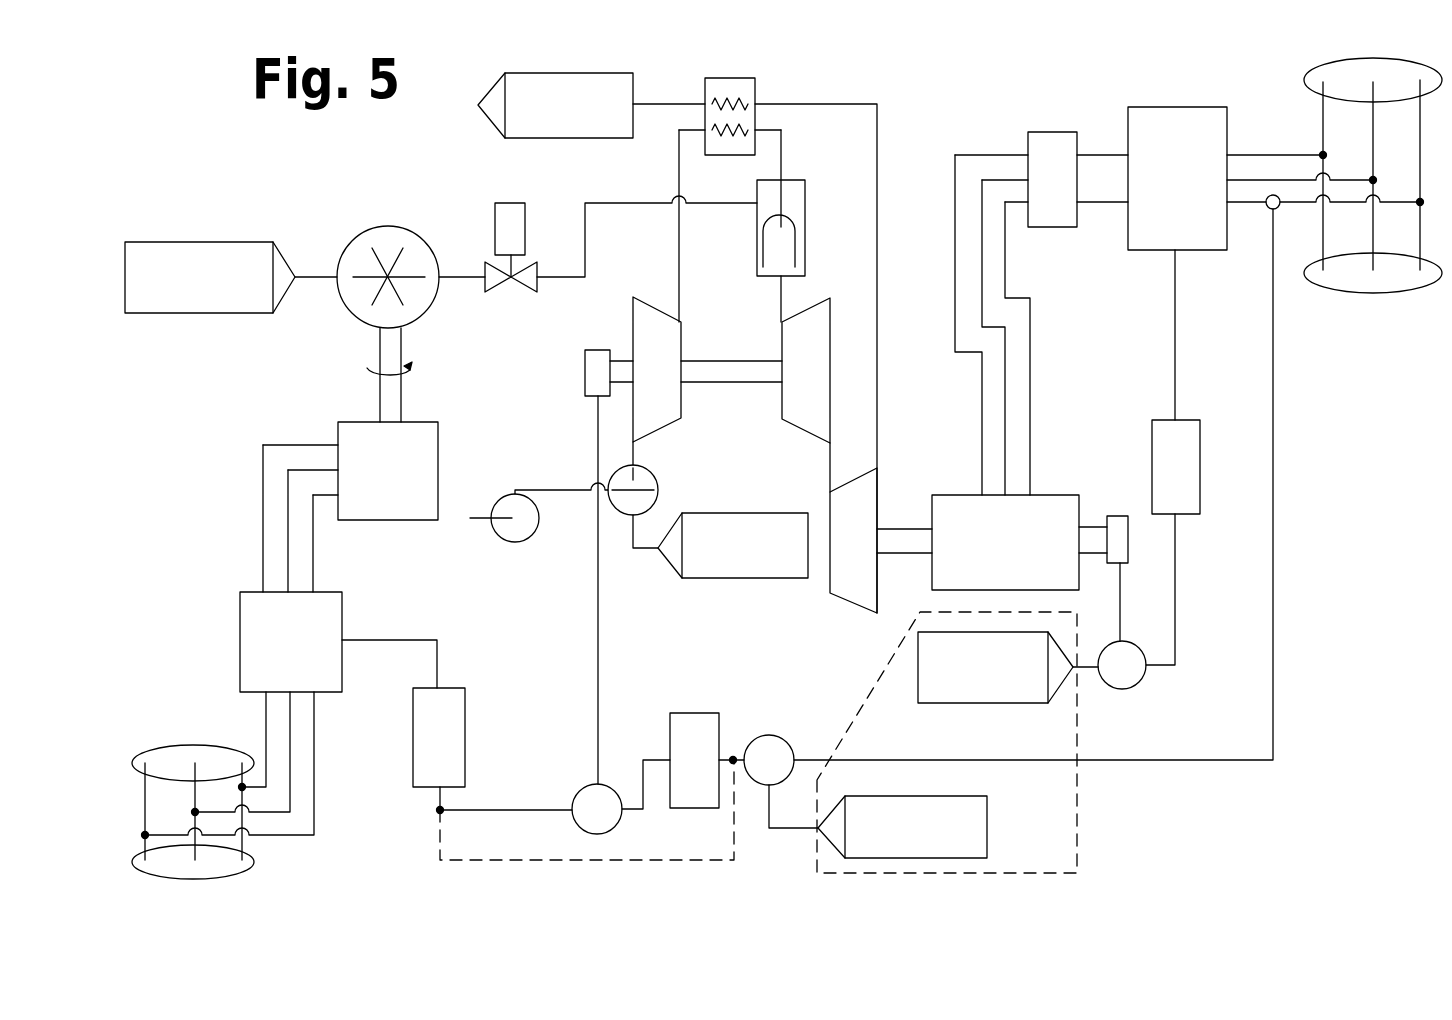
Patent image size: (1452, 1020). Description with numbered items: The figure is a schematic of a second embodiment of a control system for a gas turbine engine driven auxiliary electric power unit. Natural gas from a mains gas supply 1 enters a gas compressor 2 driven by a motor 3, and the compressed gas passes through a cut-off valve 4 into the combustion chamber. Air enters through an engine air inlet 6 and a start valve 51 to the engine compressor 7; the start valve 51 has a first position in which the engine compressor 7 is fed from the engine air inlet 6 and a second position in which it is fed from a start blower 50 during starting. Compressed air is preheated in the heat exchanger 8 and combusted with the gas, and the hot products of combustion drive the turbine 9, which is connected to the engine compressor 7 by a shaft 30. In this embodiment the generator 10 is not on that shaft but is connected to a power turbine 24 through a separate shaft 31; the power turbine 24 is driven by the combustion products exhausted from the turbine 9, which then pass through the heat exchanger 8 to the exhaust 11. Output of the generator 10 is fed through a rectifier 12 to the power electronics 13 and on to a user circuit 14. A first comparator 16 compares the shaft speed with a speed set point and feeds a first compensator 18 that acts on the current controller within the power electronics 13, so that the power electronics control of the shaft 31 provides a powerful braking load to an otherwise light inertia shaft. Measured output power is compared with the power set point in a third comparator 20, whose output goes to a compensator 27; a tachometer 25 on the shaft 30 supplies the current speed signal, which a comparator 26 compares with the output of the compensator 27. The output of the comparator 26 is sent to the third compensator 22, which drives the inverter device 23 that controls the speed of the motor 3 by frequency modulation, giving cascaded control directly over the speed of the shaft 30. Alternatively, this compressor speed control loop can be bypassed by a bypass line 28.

The mains gas supply 1 is at (243, 241).
The gas compressor 2 is at (385, 226).
The motor 3 is at (350, 460).
The cut-off valve 4 is at (516, 203).
The engine air inlet 6 is at (726, 580).
The engine compressor 7 is at (651, 296).
The heat exchanger 8 is at (735, 78).
The turbine 9 is at (815, 298).
The generator 10 is at (1030, 568).
The exhaust 11 is at (598, 73).
The rectifier 12 is at (1041, 313).
The power electronics 13 is at (1107, 433).
The user circuit 14 is at (1373, 293).
The first comparator 16 is at (1136, 685).
The first compensator 18 is at (1173, 542).
The third comparator 20 is at (769, 735).
The third compensator 22 is at (492, 751).
The inverter device 23 is at (291, 713).
The power turbine 24 is at (847, 606).
The tachometer 25 is at (585, 383).
The comparator 26 is at (578, 793).
The compensator 27 is at (707, 760).
The bypass line 28 is at (625, 860).
The shaft 30 is at (745, 383).
The shaft 31 is at (905, 527).
The start blower 50 is at (515, 542).
The start valve 51 is at (660, 478).